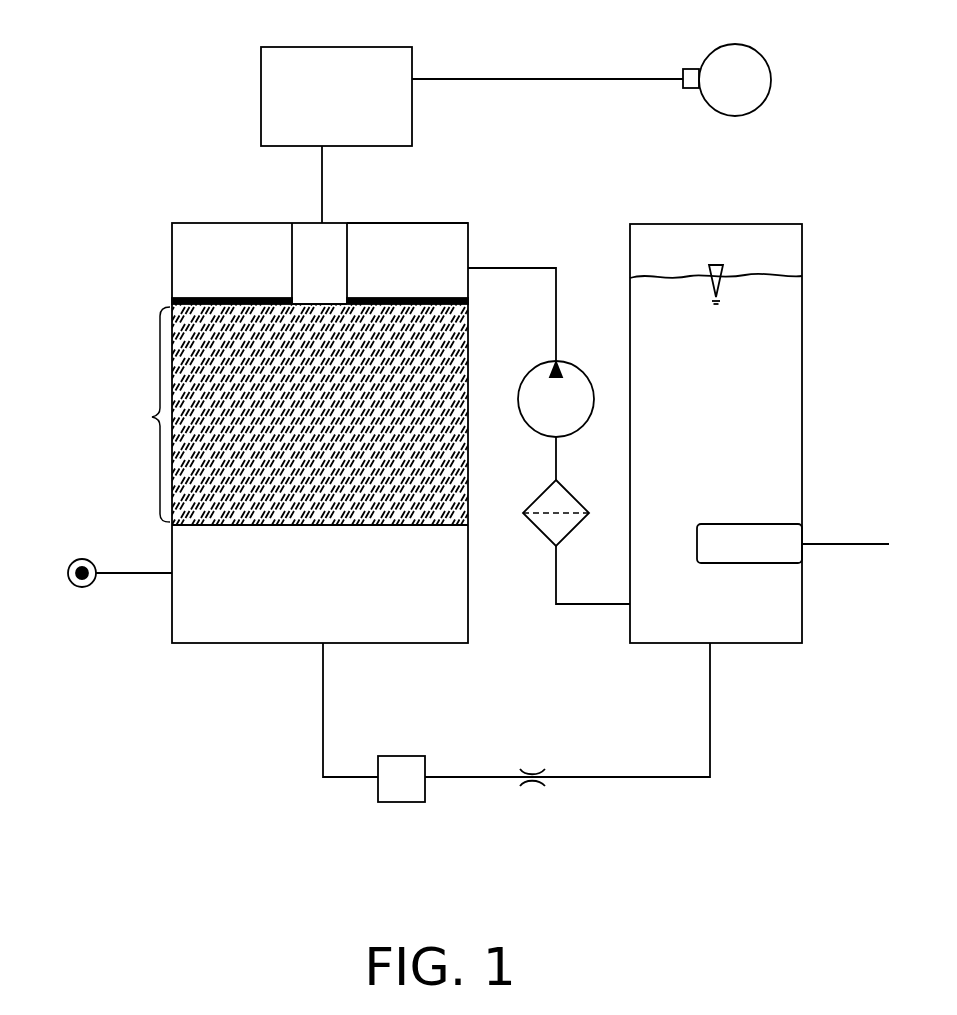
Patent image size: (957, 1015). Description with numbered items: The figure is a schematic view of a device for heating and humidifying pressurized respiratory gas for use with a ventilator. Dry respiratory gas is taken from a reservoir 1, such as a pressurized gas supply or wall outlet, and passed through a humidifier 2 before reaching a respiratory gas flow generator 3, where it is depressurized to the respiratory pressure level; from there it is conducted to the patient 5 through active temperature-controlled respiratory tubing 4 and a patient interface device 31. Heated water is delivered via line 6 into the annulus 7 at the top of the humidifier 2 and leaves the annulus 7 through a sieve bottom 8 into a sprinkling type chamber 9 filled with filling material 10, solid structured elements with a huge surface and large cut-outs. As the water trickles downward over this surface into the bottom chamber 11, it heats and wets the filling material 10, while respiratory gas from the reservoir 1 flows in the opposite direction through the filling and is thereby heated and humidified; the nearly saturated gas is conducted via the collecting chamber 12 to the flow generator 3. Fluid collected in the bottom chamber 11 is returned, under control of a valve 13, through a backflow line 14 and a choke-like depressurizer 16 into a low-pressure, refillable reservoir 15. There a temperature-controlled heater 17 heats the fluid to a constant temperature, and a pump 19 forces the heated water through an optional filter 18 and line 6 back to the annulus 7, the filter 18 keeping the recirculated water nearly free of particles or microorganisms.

The reservoir 1 is at (80, 560).
The humidifier 2 is at (172, 268).
The respiratory gas flow generator 3 is at (260, 96).
The respiratory tubing 4 is at (560, 78).
The patient 5 is at (762, 57).
The line 6 is at (533, 268).
The annulus 7 is at (435, 238).
The sieve bottom 8 is at (230, 298).
The sprinkling type chamber 9 is at (148, 414).
The filling material 10 is at (450, 441).
The bottom chamber 11 is at (258, 598).
The collecting chamber 12 is at (313, 260).
The valve 13 is at (388, 802).
The backflow line 14 is at (630, 778).
The reservoir 15 is at (763, 383).
The depressurizer 16 is at (538, 783).
The temperature-controlled heater 17 is at (742, 547).
The filter 18 is at (541, 538).
The pump 19 is at (540, 366).
The patient interface device 31 is at (692, 68).